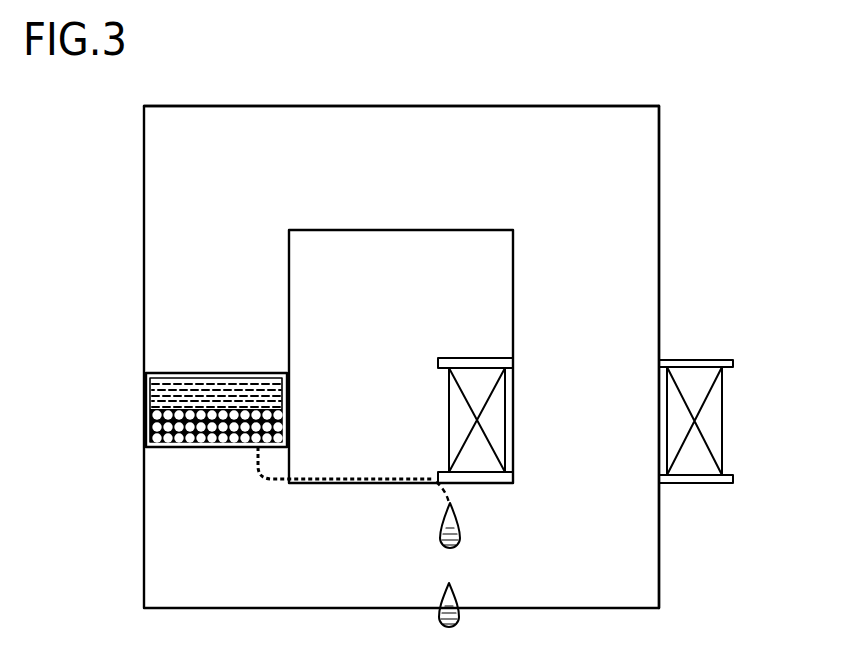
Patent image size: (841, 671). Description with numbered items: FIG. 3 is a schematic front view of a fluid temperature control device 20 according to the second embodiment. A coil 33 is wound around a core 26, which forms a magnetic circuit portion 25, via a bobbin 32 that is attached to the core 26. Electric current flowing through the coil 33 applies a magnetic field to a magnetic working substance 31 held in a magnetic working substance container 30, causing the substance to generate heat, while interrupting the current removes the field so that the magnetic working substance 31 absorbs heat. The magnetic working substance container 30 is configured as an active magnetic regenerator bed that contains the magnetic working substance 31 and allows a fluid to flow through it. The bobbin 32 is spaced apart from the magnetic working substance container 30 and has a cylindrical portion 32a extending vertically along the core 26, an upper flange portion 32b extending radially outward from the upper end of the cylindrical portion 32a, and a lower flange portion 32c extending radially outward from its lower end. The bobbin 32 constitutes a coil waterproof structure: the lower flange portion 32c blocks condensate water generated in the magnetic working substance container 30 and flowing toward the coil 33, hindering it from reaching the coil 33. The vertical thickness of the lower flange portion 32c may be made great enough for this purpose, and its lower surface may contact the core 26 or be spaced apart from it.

The fluid temperature control device 20 is at (262, 82).
The magnetic circuit portion 25 is at (495, 105).
The core 26 is at (597, 105).
The magnetic working substance container 30 is at (143, 413).
The magnetic working substance 31 is at (268, 428).
The bobbin 32 is at (475, 357).
The cylindrical portion 32a is at (658, 434).
The upper flange portion 32b is at (699, 360).
The lower flange portion 32c is at (699, 483).
The coil 33 is at (722, 413).